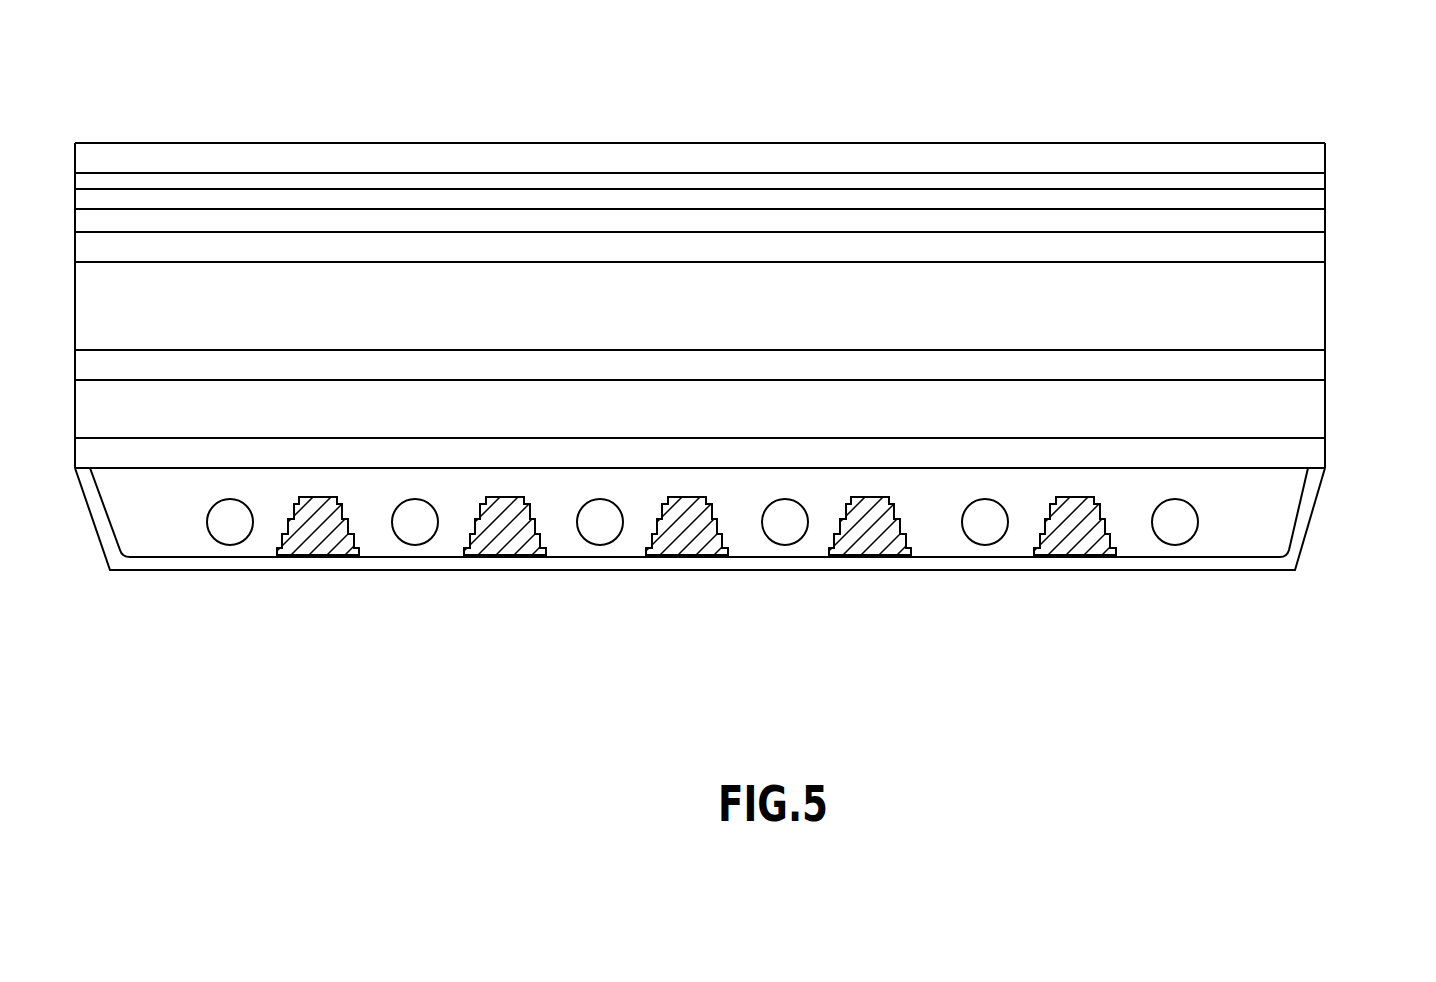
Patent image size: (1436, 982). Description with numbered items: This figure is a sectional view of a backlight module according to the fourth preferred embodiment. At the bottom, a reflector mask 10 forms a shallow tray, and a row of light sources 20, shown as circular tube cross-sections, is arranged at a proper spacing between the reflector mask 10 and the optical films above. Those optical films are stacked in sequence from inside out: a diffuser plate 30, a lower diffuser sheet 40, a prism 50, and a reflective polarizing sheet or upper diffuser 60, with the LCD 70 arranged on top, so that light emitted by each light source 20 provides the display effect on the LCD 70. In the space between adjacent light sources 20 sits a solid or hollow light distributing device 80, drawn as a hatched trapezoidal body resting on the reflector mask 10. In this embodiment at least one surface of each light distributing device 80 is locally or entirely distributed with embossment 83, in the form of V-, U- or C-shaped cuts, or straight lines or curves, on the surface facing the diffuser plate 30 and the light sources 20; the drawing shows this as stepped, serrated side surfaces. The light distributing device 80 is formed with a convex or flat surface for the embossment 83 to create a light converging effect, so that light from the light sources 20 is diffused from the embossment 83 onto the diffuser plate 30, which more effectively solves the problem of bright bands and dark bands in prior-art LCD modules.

The reflector mask 10 is at (1248, 562).
The light sources 20 is at (415, 535).
The diffuser plate 30 is at (1315, 458).
The lower diffuser sheet 40 is at (1315, 375).
The prism 50 is at (1315, 256).
The upper diffuser 60 is at (1318, 204).
The LCD 70 is at (1158, 148).
The light distributing device 80 is at (680, 545).
The embossment 83 is at (838, 528).